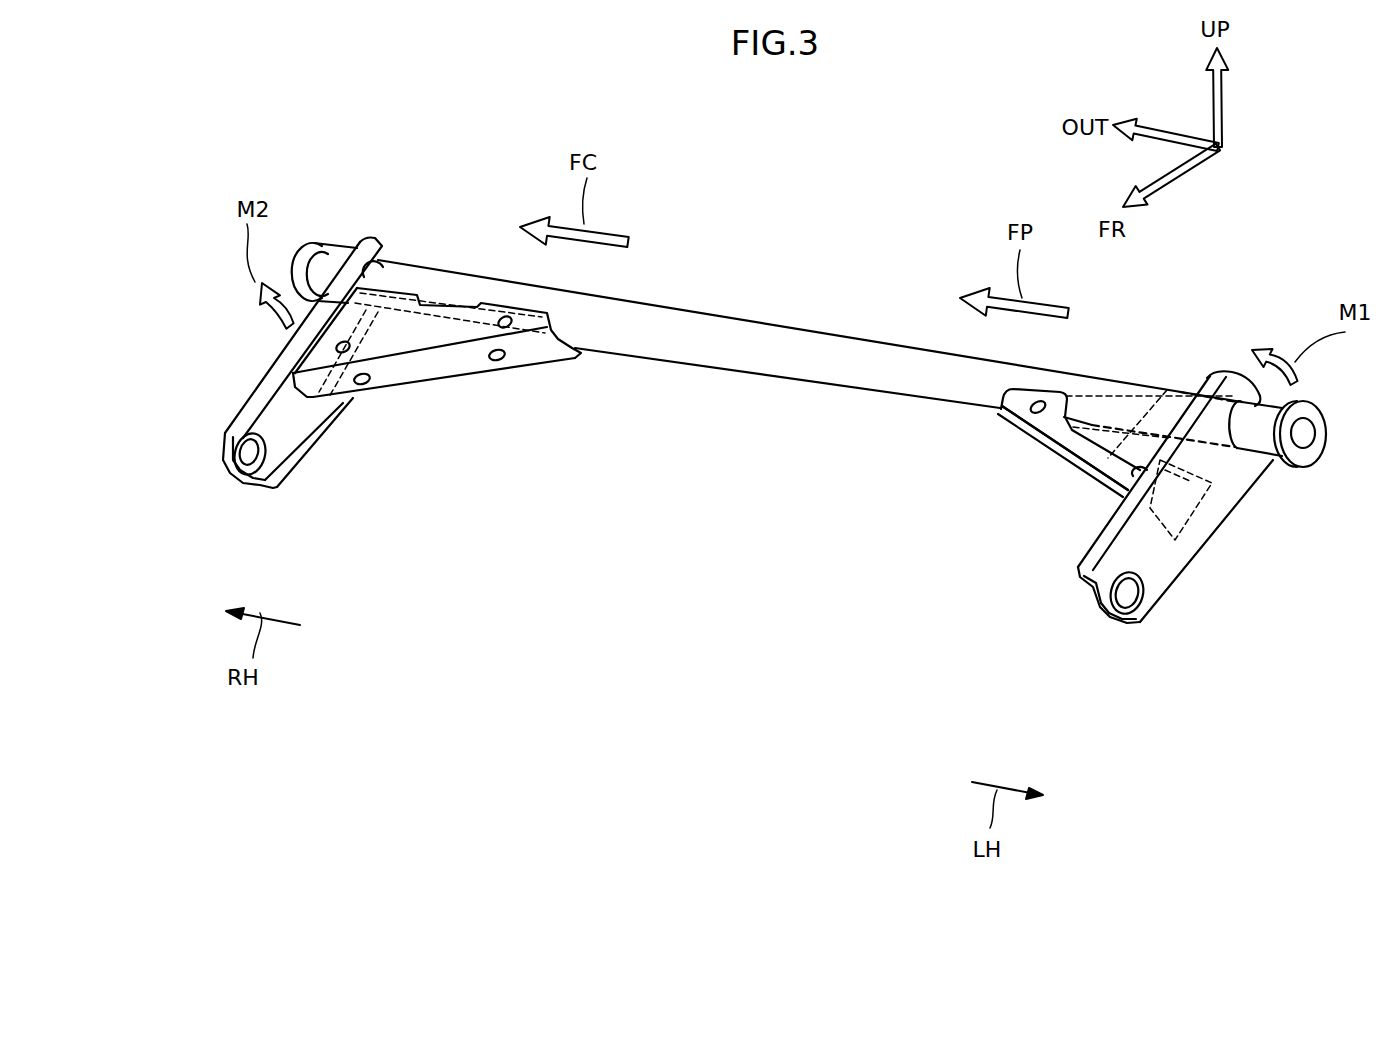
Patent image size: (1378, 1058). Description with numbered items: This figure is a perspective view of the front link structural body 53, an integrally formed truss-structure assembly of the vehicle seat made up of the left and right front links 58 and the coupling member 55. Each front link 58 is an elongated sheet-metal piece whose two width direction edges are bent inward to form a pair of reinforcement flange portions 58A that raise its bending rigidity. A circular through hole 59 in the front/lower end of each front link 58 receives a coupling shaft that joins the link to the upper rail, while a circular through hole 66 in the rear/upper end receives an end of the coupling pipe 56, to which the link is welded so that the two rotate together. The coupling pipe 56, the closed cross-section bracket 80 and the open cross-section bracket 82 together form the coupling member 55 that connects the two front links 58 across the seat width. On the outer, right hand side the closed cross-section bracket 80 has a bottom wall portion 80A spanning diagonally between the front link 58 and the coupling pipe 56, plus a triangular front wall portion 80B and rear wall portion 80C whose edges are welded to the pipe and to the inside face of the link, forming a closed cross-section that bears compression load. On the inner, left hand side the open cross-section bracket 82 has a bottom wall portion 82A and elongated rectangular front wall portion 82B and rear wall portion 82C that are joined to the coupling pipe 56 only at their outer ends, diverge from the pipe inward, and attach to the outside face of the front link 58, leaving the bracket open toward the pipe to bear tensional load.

The front link structural body 53 is at (829, 193).
The coupling member 55 is at (857, 336).
The coupling pipe 56 is at (757, 322).
The front link 58 is at (285, 357).
The reinforcement flange portion 58A is at (255, 400).
The through hole 59 is at (240, 458).
The through hole 66 is at (372, 241).
The closed cross-section bracket 80 is at (410, 387).
The bottom wall portion 80A is at (463, 358).
The front wall portion 80B is at (397, 332).
The rear wall portion 80C is at (440, 332).
The open cross-section bracket 82 is at (1077, 470).
The bottom wall portion 82A is at (1052, 452).
The front wall portion 82B is at (1085, 395).
The rear wall portion 82C is at (1105, 440).